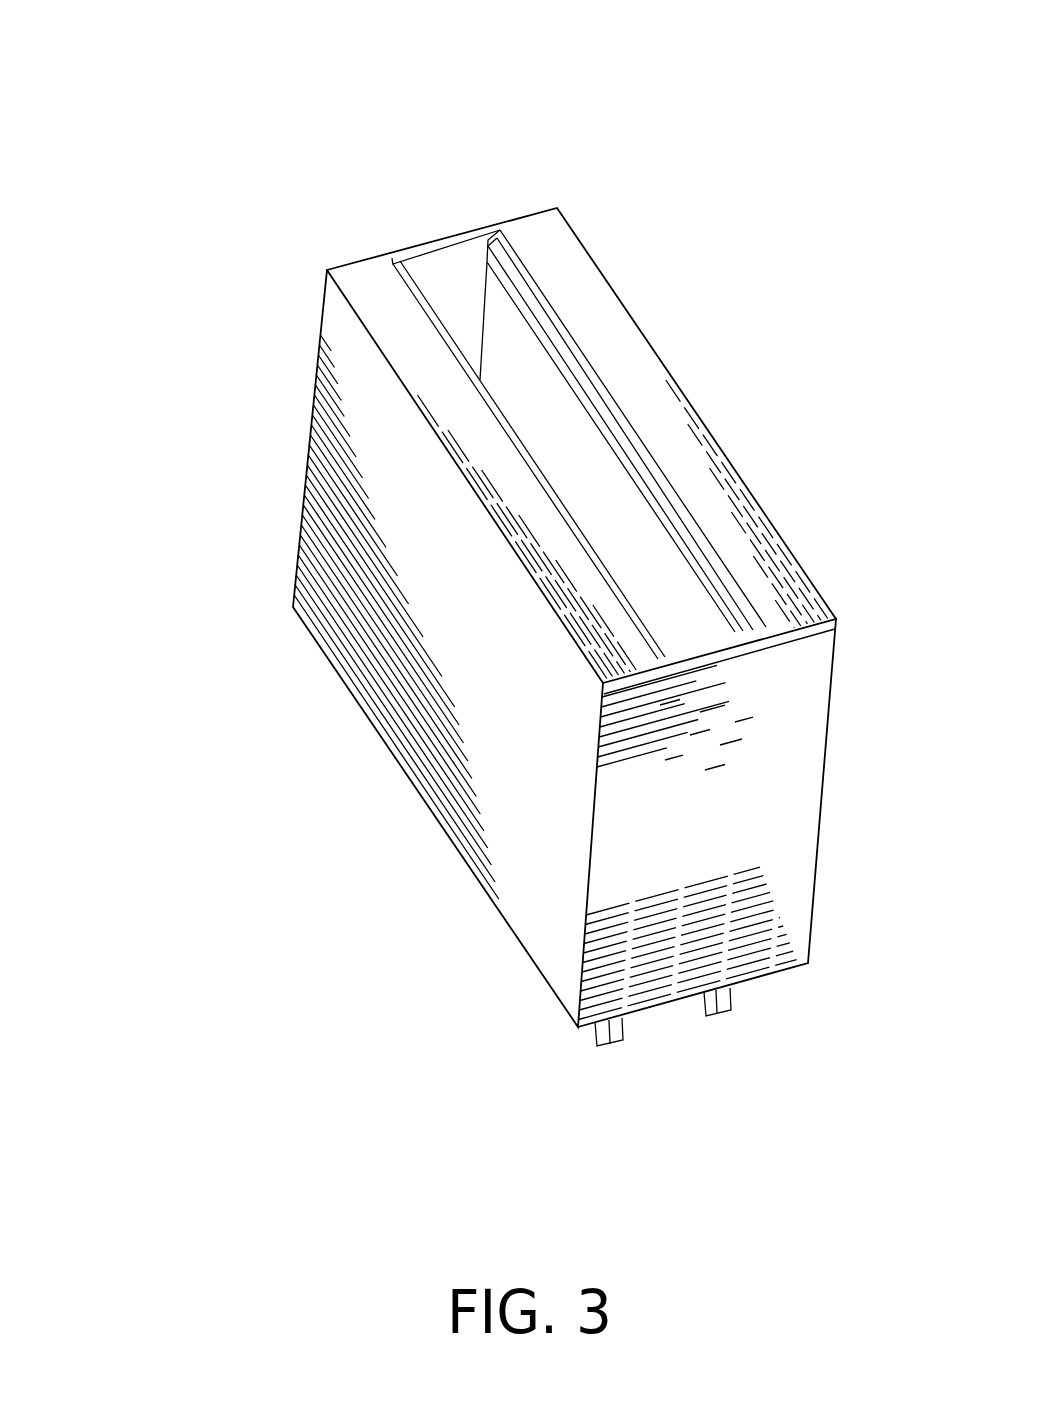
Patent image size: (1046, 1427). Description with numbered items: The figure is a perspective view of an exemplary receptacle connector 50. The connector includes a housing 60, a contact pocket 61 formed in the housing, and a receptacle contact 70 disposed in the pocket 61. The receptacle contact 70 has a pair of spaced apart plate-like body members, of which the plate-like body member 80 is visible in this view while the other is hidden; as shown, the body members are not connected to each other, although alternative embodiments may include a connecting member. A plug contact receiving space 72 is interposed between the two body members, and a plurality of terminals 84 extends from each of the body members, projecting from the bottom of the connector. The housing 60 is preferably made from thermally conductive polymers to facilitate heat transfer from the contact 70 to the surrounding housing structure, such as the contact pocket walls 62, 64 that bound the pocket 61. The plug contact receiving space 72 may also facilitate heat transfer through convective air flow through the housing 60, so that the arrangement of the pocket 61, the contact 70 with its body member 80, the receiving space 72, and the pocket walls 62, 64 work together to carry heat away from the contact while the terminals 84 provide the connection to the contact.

The receptacle connector 50 is at (195, 137).
The housing 60 is at (550, 238).
The contact pocket 61 is at (456, 256).
The contact pocket wall 62 is at (653, 490).
The contact pocket wall 64 is at (540, 477).
The receptacle contact 70 is at (514, 355).
The plug contact receiving space 72 is at (640, 561).
The plate-like body member 80 is at (553, 410).
The terminals 84 is at (720, 1014).